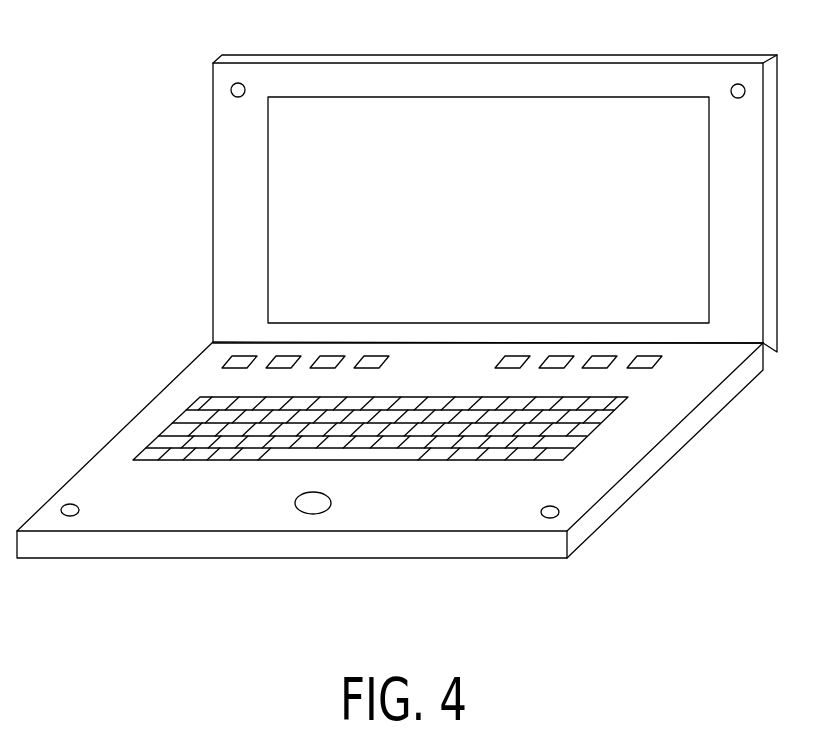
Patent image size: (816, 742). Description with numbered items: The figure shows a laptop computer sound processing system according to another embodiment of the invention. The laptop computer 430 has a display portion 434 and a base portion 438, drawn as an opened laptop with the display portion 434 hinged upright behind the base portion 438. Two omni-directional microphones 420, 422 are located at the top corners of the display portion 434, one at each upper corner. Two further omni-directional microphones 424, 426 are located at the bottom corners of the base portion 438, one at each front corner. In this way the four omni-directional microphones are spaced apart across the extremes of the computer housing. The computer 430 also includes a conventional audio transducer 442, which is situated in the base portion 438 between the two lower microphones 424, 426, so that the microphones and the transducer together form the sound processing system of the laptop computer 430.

The omni-directional microphone 420 is at (245, 90).
The omni-directional microphone 422 is at (731, 91).
The omni-directional microphone 424 is at (79, 508).
The omni-directional microphone 426 is at (541, 512).
The laptop computer 430 is at (483, 120).
The display portion 434 is at (212, 190).
The base portion 438 is at (190, 559).
The audio transducer 442 is at (308, 514).